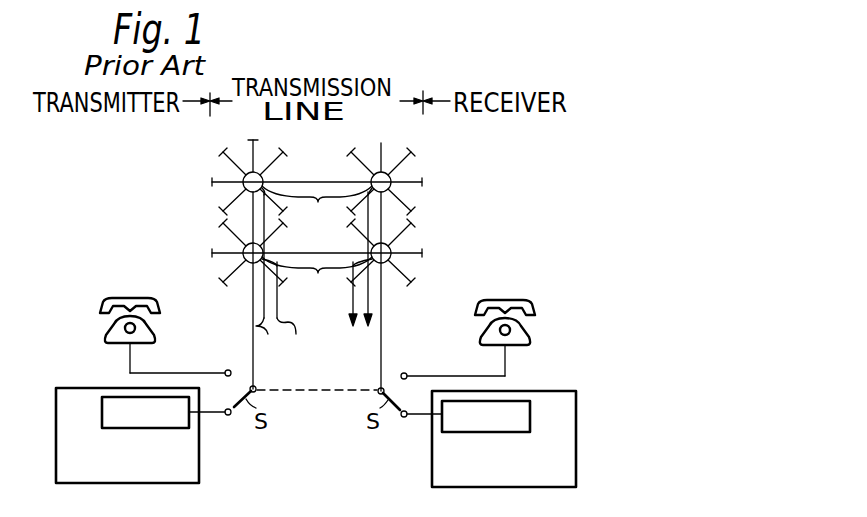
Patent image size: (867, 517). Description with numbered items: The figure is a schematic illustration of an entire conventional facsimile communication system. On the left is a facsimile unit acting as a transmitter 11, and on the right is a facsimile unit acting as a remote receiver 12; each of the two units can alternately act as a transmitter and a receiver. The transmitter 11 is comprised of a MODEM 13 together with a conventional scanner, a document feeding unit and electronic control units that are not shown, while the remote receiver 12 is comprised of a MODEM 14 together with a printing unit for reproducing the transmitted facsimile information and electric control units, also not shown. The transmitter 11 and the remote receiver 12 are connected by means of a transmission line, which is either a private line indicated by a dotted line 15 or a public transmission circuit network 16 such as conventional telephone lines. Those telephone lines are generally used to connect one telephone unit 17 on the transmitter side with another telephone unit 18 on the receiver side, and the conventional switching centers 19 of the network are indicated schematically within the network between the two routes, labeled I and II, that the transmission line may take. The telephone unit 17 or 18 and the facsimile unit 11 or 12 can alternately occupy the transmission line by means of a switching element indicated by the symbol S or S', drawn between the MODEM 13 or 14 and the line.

The facsimile unit acting as a transmitter 11 is at (112, 483).
The facsimile unit acting as a remote receiver 12 is at (500, 488).
The MODEM 13 is at (177, 430).
The MODEM 14 is at (446, 436).
The private line 15 is at (313, 394).
The public transmission circuit network 16 is at (452, 211).
The telephone unit 17 is at (108, 334).
The telephone unit 18 is at (535, 340).
The switching centers 19 is at (317, 244).